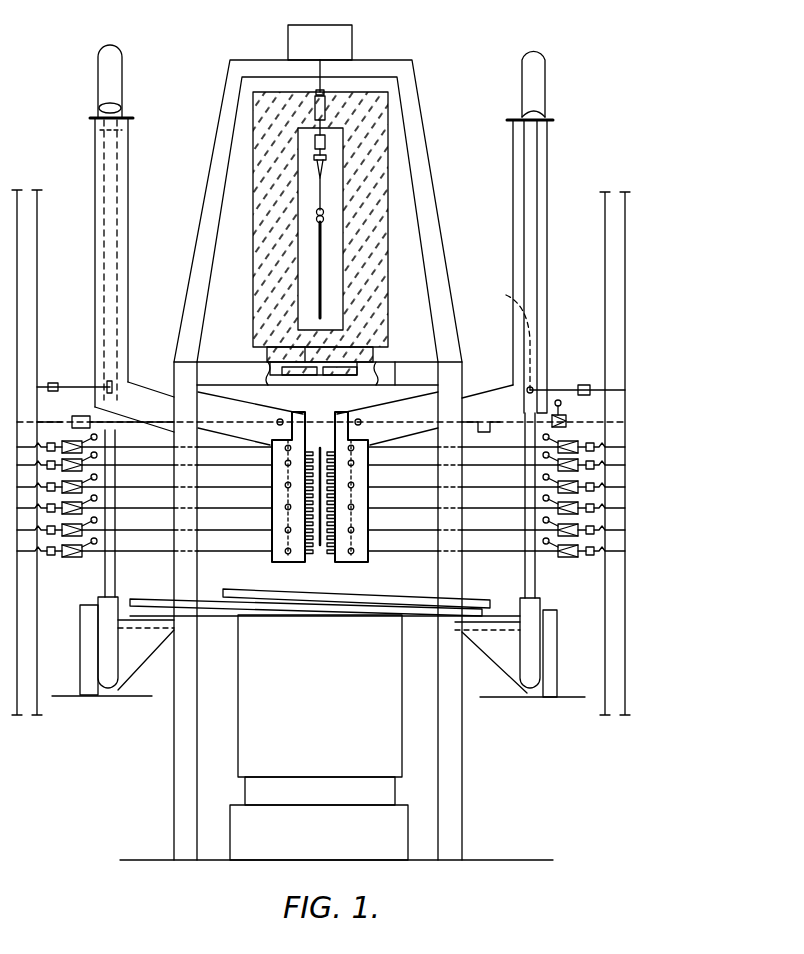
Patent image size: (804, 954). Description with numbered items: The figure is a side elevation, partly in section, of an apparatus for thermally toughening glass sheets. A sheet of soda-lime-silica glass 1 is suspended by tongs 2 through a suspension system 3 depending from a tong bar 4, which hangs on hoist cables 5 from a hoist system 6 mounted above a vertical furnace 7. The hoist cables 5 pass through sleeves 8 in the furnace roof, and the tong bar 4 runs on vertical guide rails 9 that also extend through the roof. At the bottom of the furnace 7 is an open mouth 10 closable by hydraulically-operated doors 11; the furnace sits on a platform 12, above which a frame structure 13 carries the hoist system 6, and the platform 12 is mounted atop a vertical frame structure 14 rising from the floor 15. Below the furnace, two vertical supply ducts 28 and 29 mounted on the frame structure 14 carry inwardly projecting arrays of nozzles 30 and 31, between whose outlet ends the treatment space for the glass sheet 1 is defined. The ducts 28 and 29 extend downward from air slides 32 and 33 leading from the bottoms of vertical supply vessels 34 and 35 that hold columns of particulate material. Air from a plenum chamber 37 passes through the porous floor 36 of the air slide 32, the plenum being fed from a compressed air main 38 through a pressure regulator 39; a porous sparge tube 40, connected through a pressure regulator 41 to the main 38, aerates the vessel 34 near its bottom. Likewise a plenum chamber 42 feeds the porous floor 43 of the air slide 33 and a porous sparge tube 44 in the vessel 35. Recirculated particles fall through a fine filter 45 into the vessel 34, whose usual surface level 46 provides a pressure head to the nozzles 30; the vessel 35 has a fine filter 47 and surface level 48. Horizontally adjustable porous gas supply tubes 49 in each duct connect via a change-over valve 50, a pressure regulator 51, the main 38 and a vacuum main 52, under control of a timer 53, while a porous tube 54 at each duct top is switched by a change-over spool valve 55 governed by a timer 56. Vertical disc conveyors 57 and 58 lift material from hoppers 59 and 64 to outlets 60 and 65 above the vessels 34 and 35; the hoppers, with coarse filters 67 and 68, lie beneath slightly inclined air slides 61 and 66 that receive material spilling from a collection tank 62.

The sheet of soda-lime-silica glass 1 is at (318, 252).
The tongs 2 is at (316, 213).
The suspension system 3 is at (318, 165).
The tong bar 4 is at (316, 143).
The hoist cables 5 is at (318, 118).
The hoist system 6 is at (346, 40).
The vertical furnace 7 is at (370, 248).
The sleeves 8 is at (318, 98).
The vertical guide rails 9 is at (320, 78).
The open mouth 10 is at (315, 340).
The hydraulically-operated doors 11 is at (340, 370).
The platform 12 is at (395, 372).
The frame structure 13 is at (418, 110).
The vertical frame structure 14 is at (462, 758).
The floor 15 is at (518, 860).
The vertical supply duct 28 is at (360, 548).
The vertical supply duct 29 is at (278, 540).
The nozzles 30 is at (320, 565).
The nozzles 31 is at (308, 565).
The air slide 32 is at (480, 440).
The air slide 33 is at (160, 395).
The vertical supply vessel 34 is at (515, 269).
The vertical supply vessel 35 is at (122, 285).
The porous floor 36 is at (490, 420).
The plenum chamber 37 is at (462, 395).
The compressed air main 38 is at (605, 213).
The pressure regulator 39 is at (503, 430).
The porous sparge tube 40 is at (508, 296).
The pressure regulator 41 is at (588, 385).
The plenum chamber 42 is at (220, 432).
The porous floor 43 is at (130, 430).
The porous sparge tube 44 is at (110, 383).
The fine filter 45 is at (535, 137).
The surface level 46 is at (530, 255).
The fine filter 47 is at (95, 126).
The surface level 48 is at (110, 250).
The porous gas supply tubes 49 is at (352, 450).
The change-over valve 50 is at (566, 552).
The pressure regulator 51 is at (582, 555).
The vacuum main 52 is at (625, 240).
The timer 53 is at (546, 452).
The porous tube 54 is at (321, 418).
The change-over spool valve 55 is at (566, 421).
The timer 56 is at (556, 400).
The vertical disc conveyor 57 is at (530, 181).
The vertical disc conveyor 58 is at (104, 580).
The hopper 59 is at (535, 640).
The outlet 60 is at (530, 69).
The air slide 61 is at (400, 600).
The collection tank 62 is at (334, 746).
The hopper 64 is at (146, 660).
The outlet 65 is at (104, 66).
The air slide 66 is at (210, 605).
The coarse filter 67 is at (468, 632).
The coarse filter 68 is at (150, 625).